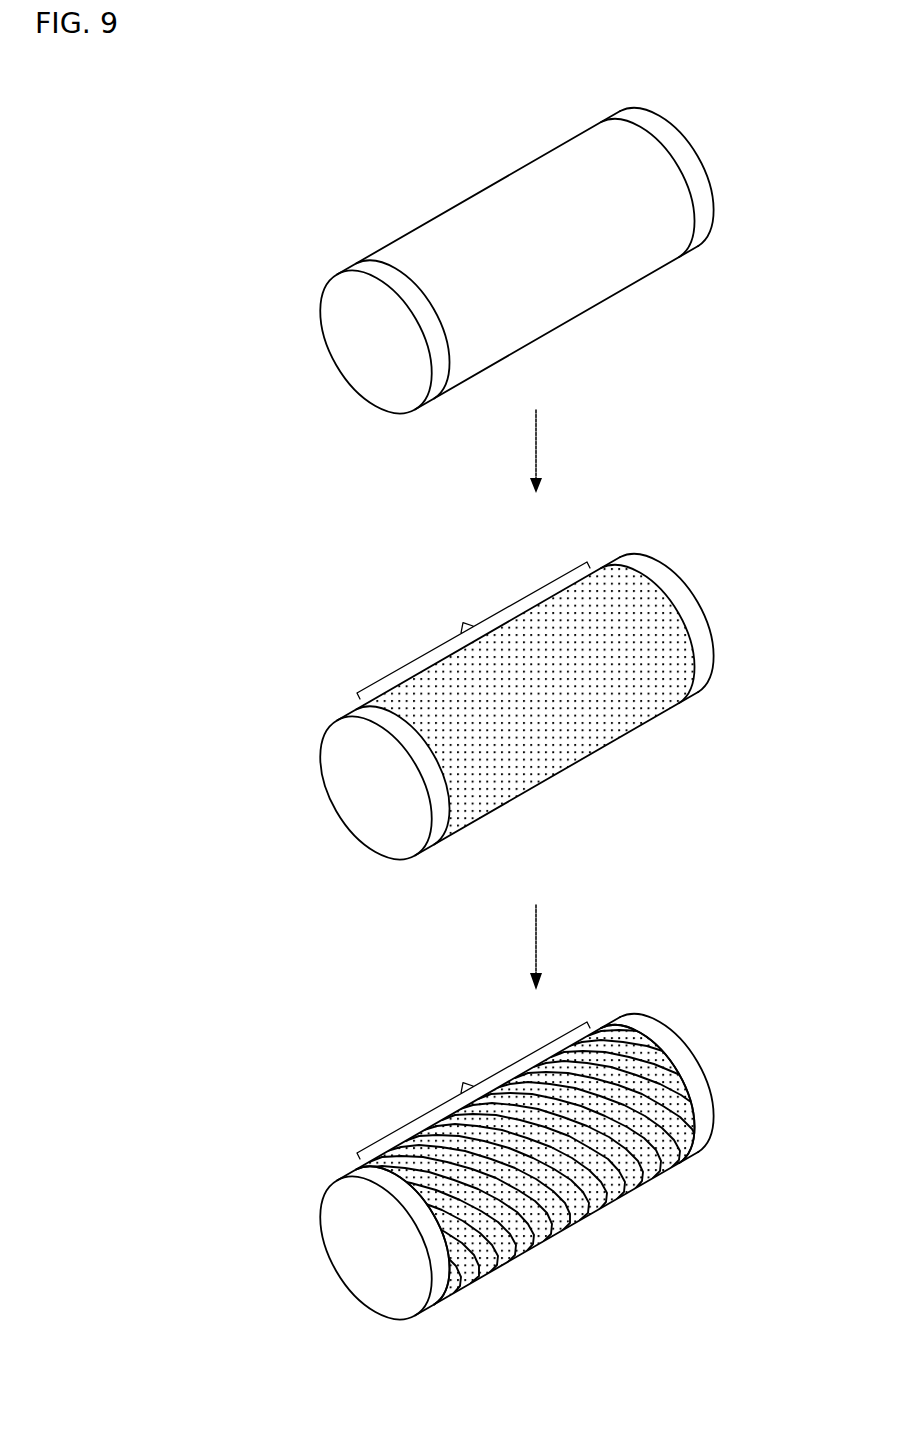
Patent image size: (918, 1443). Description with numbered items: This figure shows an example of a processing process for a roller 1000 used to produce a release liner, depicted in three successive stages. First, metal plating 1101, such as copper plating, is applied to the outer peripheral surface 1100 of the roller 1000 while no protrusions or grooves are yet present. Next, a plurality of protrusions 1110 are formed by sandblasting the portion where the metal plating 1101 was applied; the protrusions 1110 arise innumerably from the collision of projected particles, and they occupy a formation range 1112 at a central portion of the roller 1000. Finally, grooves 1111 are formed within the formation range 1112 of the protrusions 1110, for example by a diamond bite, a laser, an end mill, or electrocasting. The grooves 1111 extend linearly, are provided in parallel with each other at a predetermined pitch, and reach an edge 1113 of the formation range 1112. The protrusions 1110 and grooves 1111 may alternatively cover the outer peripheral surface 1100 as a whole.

The roller 1000 is at (292, 175).
The outer peripheral surface 1100 is at (686, 173).
The metal plating 1101 is at (552, 262).
The protrusion 1110 is at (607, 670).
The groove 1111 is at (622, 1124).
The formation range 1112 is at (473, 860).
The edge 1113 is at (690, 1117).